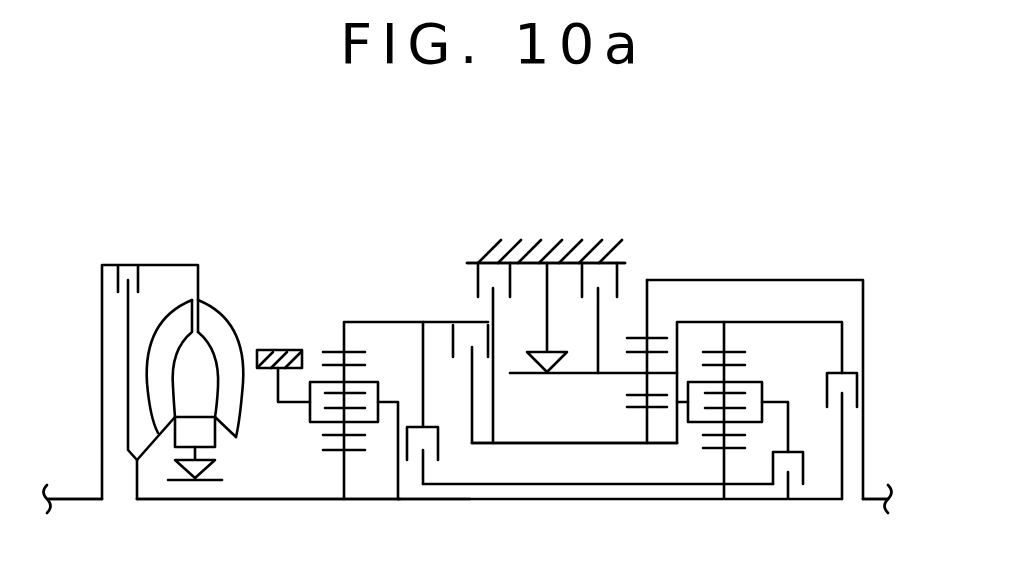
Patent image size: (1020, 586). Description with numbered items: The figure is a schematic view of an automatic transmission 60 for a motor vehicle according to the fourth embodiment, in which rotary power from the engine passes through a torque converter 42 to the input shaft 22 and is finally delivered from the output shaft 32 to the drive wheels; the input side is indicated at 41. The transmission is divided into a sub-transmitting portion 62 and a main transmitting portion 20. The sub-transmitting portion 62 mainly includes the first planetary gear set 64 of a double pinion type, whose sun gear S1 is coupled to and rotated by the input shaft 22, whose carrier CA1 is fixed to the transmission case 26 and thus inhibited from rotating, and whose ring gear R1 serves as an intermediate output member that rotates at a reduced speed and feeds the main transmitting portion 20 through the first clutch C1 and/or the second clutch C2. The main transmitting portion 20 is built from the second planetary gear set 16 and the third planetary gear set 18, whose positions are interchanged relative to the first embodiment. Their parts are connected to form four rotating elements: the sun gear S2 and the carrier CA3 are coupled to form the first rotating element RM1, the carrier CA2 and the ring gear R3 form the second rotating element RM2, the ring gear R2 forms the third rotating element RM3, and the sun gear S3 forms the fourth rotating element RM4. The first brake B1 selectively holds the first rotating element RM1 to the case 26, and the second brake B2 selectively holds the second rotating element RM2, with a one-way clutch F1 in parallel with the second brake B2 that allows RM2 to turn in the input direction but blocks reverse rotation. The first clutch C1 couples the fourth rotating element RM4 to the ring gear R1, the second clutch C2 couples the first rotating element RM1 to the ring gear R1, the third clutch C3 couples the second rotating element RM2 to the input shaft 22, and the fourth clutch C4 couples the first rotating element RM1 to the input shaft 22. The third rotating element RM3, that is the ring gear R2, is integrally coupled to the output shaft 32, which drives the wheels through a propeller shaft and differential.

The engine output shaft 41 is at (68, 500).
The torque converter 42 is at (180, 248).
The input shaft 22 is at (198, 500).
The transmission case 26 is at (277, 350).
The first planetary gear set 64 is at (327, 285).
The sub-transmitting portion 62 is at (330, 513).
The main transmitting portion 20 is at (428, 260).
The automatic transmission 60 is at (695, 213).
The third planetary gear set 18 is at (708, 280).
The second planetary gear set 16 is at (643, 457).
The output shaft 32 is at (880, 500).
The ring gear R1 is at (347, 353).
The carrier CA1 is at (307, 413).
The sun gear S1 is at (350, 450).
The ring gear R2 is at (657, 337).
The carrier CA2 is at (623, 375).
The sun gear S2 is at (640, 407).
The ring gear R3 is at (710, 352).
The carrier CA3 is at (787, 362).
The sun gear S3 is at (715, 448).
The first clutch C1 is at (437, 403).
The second clutch C2 is at (461, 364).
The third clutch C3 is at (824, 436).
The fourth clutch C4 is at (765, 478).
The first brake B1 is at (485, 250).
The second brake B2 is at (605, 288).
The one-way clutch F1 is at (536, 317).
The first rotating element RM1 is at (613, 447).
The second rotating element RM2 is at (757, 322).
The third rotating element RM3 is at (770, 278).
The fourth rotating element RM4 is at (540, 485).